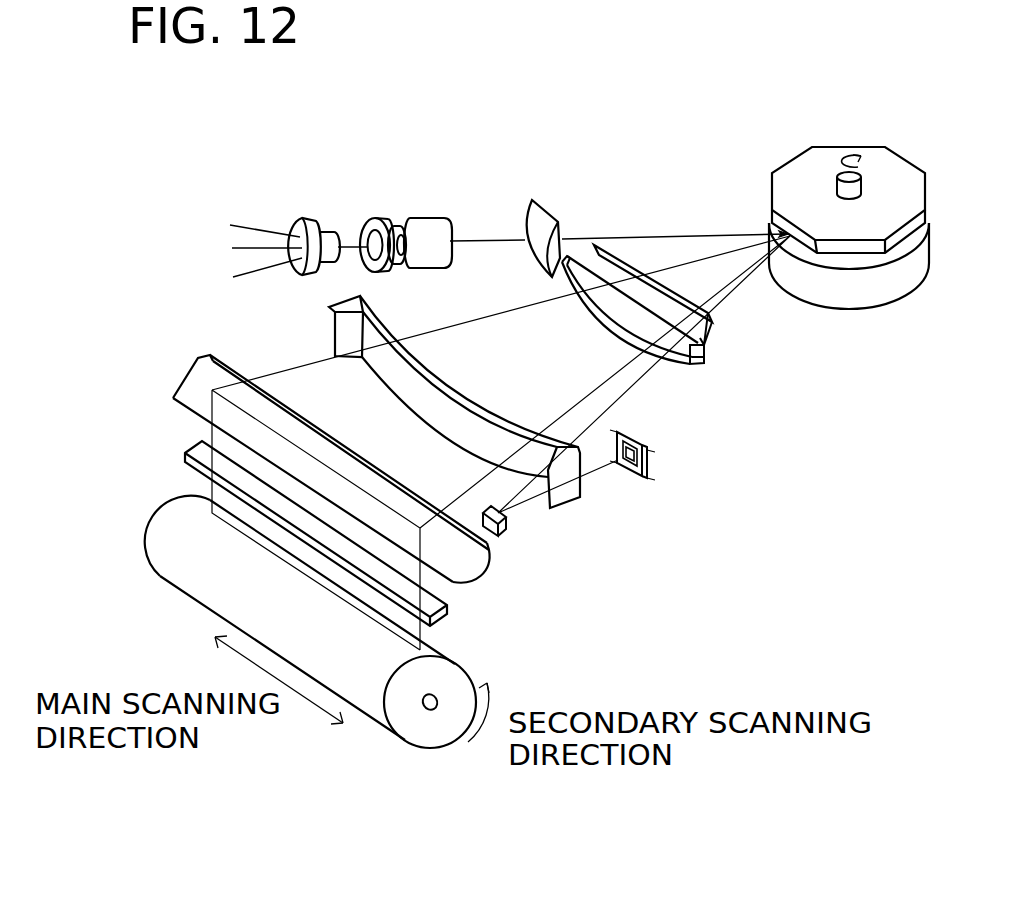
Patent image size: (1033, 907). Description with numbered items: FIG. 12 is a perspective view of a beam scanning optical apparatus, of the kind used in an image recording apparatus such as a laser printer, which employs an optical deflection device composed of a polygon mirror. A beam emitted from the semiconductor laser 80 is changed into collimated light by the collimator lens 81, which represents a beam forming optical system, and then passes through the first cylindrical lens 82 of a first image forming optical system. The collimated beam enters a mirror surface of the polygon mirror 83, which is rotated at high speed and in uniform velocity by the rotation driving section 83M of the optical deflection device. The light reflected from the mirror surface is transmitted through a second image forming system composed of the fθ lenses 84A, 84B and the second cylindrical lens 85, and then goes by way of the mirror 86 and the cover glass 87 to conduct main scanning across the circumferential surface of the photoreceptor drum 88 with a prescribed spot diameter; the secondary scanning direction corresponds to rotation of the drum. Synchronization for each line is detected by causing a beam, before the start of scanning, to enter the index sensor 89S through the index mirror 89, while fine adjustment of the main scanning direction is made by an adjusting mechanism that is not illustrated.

The semiconductor laser 80 is at (308, 218).
The collimator lens 81 is at (383, 218).
The first cylindrical lens 82 is at (552, 205).
The polygon mirror 83 is at (791, 158).
The rotation driving section 83M is at (834, 294).
The fθ lens 84A is at (662, 278).
The fθ lens 84B is at (602, 315).
The second cylindrical lens 85 is at (463, 378).
The mirror 86 is at (483, 563).
The cover glass 87 is at (455, 622).
The photoreceptor drum 88 is at (155, 522).
The index mirror 89 is at (507, 530).
The index sensor 89S is at (628, 478).